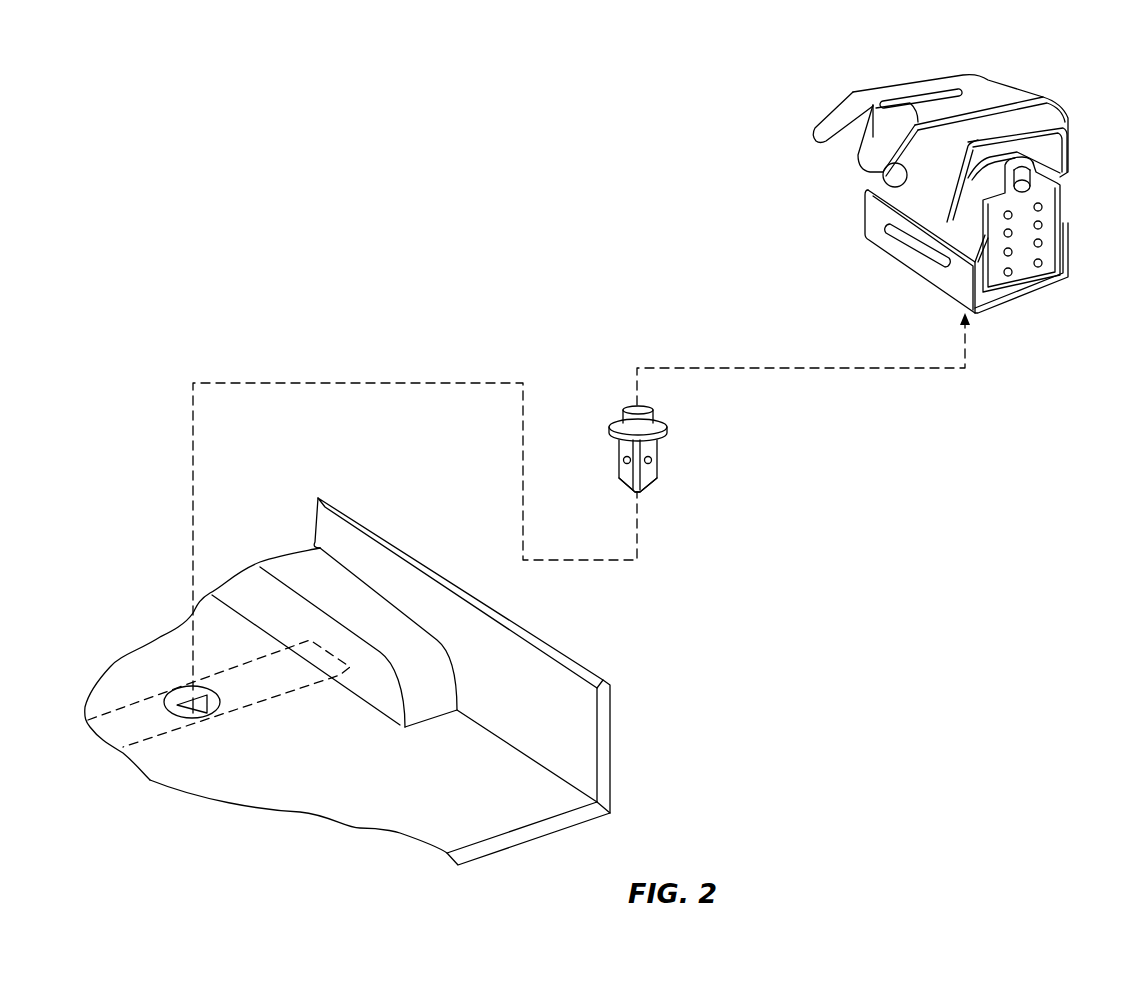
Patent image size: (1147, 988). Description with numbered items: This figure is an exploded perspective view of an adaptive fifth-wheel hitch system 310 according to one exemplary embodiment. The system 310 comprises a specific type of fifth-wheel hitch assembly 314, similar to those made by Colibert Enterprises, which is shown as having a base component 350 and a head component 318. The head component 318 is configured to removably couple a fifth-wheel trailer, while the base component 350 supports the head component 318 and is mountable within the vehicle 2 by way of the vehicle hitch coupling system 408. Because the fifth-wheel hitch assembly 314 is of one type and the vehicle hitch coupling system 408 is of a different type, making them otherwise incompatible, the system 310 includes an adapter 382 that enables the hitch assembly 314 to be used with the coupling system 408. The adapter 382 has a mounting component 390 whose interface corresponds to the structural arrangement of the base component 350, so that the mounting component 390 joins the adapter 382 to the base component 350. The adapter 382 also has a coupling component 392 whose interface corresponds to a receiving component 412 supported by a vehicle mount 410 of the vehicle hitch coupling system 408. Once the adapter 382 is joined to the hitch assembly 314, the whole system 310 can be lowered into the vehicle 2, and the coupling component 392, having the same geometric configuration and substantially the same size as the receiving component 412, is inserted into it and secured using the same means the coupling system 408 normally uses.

The vehicle 2 is at (573, 733).
The adaptive fifth-wheel hitch system 310 is at (297, 187).
The fifth-wheel hitch assembly 314 is at (817, 115).
The head component 318 is at (1022, 85).
The base component 350 is at (863, 245).
The adapter 382 is at (668, 437).
The mounting component 390 is at (653, 410).
The coupling component 392 is at (648, 478).
The vehicle hitch coupling system 408 is at (230, 713).
The vehicle mount 410 is at (147, 723).
The receiving component 412 is at (207, 710).